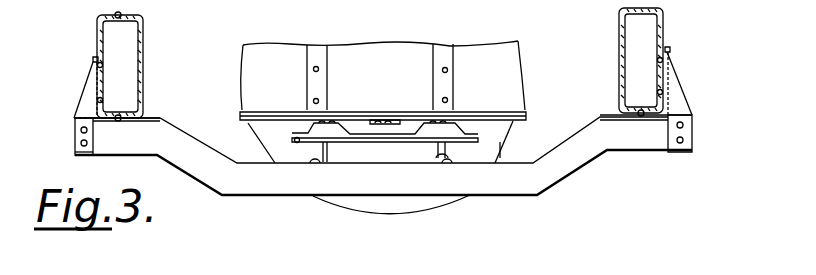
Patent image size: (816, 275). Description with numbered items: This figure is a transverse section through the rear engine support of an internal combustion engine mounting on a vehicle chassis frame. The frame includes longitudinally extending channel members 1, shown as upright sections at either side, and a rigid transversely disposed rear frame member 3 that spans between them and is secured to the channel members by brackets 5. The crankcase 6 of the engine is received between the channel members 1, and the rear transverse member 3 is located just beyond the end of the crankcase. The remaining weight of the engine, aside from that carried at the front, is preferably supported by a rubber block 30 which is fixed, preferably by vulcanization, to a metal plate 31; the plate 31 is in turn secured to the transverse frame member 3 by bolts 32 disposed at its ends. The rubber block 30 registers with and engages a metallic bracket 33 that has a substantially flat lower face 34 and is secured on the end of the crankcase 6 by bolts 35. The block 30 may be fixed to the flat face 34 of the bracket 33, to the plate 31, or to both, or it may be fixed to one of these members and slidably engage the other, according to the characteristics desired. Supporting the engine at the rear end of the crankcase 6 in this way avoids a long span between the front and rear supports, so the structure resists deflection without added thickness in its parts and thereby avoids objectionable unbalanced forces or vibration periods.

The longitudinally extending channel member 1 is at (115, 47).
The rear transverse frame member 3 is at (242, 187).
The bracket 5 is at (675, 103).
The crankcase 6 is at (505, 87).
The rubber block 30 is at (345, 150).
The metal plate 31 is at (332, 163).
The bolt 32 is at (500, 152).
The metallic bracket 33 is at (358, 128).
The flat lower face 34 is at (455, 153).
The bolt 35 is at (332, 125).